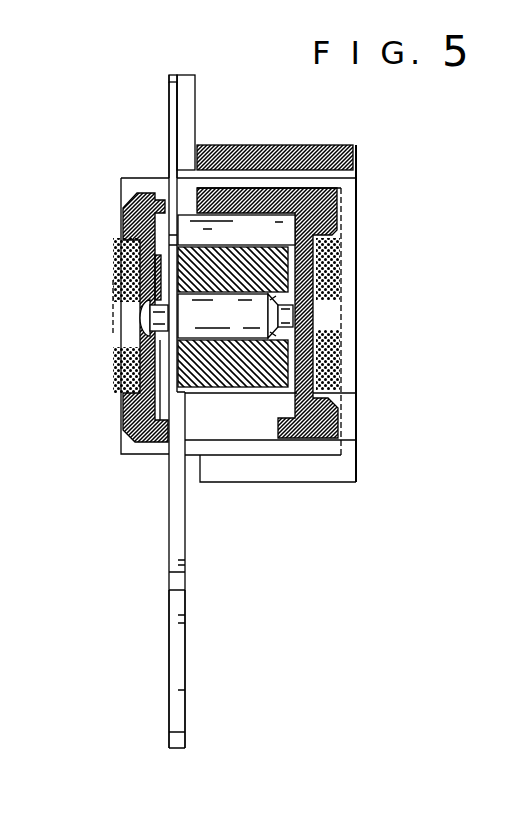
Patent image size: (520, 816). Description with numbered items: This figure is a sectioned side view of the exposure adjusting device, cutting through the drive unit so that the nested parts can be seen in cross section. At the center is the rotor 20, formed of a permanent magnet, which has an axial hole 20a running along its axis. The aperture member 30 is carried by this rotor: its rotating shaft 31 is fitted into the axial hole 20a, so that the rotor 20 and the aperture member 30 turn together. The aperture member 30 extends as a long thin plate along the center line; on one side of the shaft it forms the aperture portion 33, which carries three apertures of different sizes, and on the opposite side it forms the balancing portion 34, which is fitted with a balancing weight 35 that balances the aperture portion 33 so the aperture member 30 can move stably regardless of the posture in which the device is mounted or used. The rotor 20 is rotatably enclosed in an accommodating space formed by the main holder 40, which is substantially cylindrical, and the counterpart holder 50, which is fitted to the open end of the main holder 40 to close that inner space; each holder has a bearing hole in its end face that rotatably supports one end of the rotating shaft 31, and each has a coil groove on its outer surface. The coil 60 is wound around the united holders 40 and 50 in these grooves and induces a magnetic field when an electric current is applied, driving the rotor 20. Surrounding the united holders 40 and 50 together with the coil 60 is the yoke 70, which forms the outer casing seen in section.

The rotor 20 is at (218, 290).
The axial hole 20a is at (303, 324).
The aperture member 30 is at (170, 526).
The rotating shaft 31 is at (229, 338).
The aperture portion 33 is at (183, 614).
The balancing portion 34 is at (170, 118).
The balancing weight 35 is at (190, 97).
The main holder 40 is at (337, 200).
The counterpart holder 50 is at (120, 411).
The coil 60 is at (120, 275).
The yoke 70 is at (309, 152).